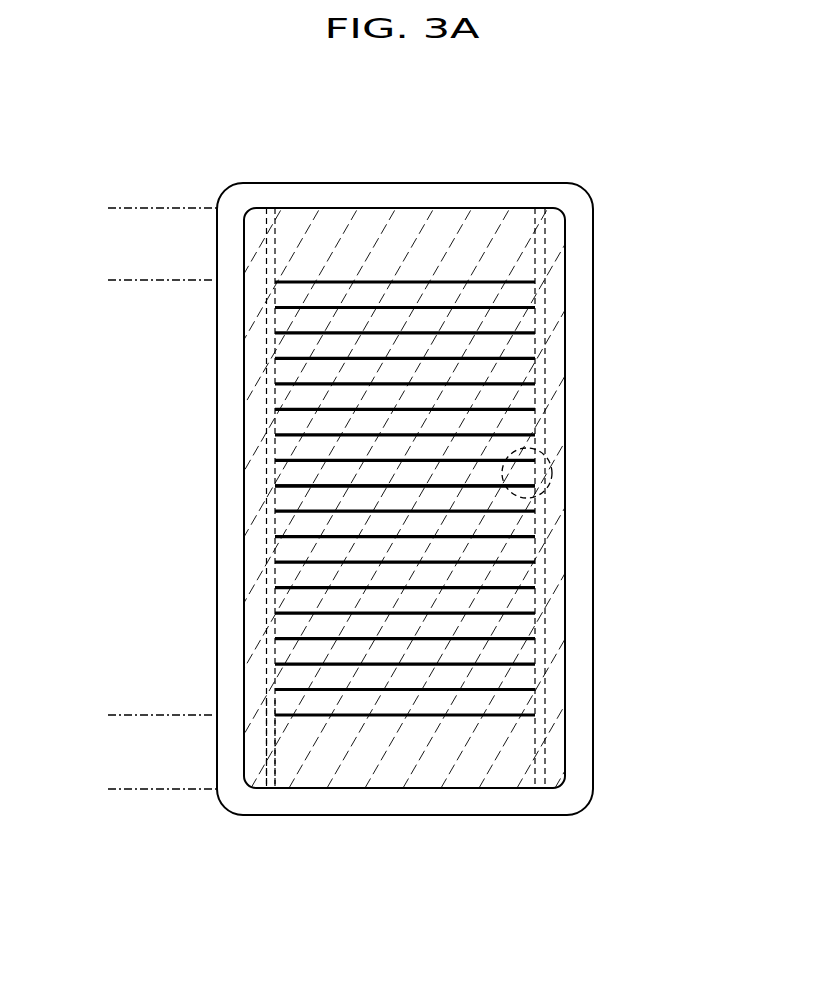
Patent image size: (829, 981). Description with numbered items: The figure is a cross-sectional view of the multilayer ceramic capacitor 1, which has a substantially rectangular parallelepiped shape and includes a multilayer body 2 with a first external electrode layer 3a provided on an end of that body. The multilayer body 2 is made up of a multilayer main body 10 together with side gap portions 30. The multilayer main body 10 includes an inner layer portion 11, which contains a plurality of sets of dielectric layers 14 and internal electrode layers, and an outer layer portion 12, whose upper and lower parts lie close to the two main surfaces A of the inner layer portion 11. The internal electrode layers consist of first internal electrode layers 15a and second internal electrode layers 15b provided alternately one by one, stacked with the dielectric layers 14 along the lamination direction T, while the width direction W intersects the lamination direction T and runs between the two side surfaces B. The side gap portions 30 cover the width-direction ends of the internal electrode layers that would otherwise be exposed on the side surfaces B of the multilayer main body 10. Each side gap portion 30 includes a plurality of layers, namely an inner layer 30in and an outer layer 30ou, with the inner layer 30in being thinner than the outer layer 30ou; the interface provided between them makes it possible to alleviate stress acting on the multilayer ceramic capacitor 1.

The multilayer ceramic capacitor 1 is at (614, 112).
The multilayer body 2 is at (572, 118).
The first external electrode layer 3a is at (399, 184).
The multilayer main body 10 is at (460, 207).
The inner layer portion 11 is at (103, 281).
The outer layer portion 12 is at (110, 208).
The dielectric layer 14 is at (534, 714).
The first internal electrode layer 15a is at (523, 455).
The second internal electrode layer 15b is at (523, 483).
The side gap portion 30 is at (253, 220).
The outer layer 30ou is at (249, 760).
The inner layer 30in is at (270, 776).
The main surface A is at (328, 207).
The side surface B is at (243, 570).
The lamination direction T is at (735, 316).
The width direction W is at (320, 905).